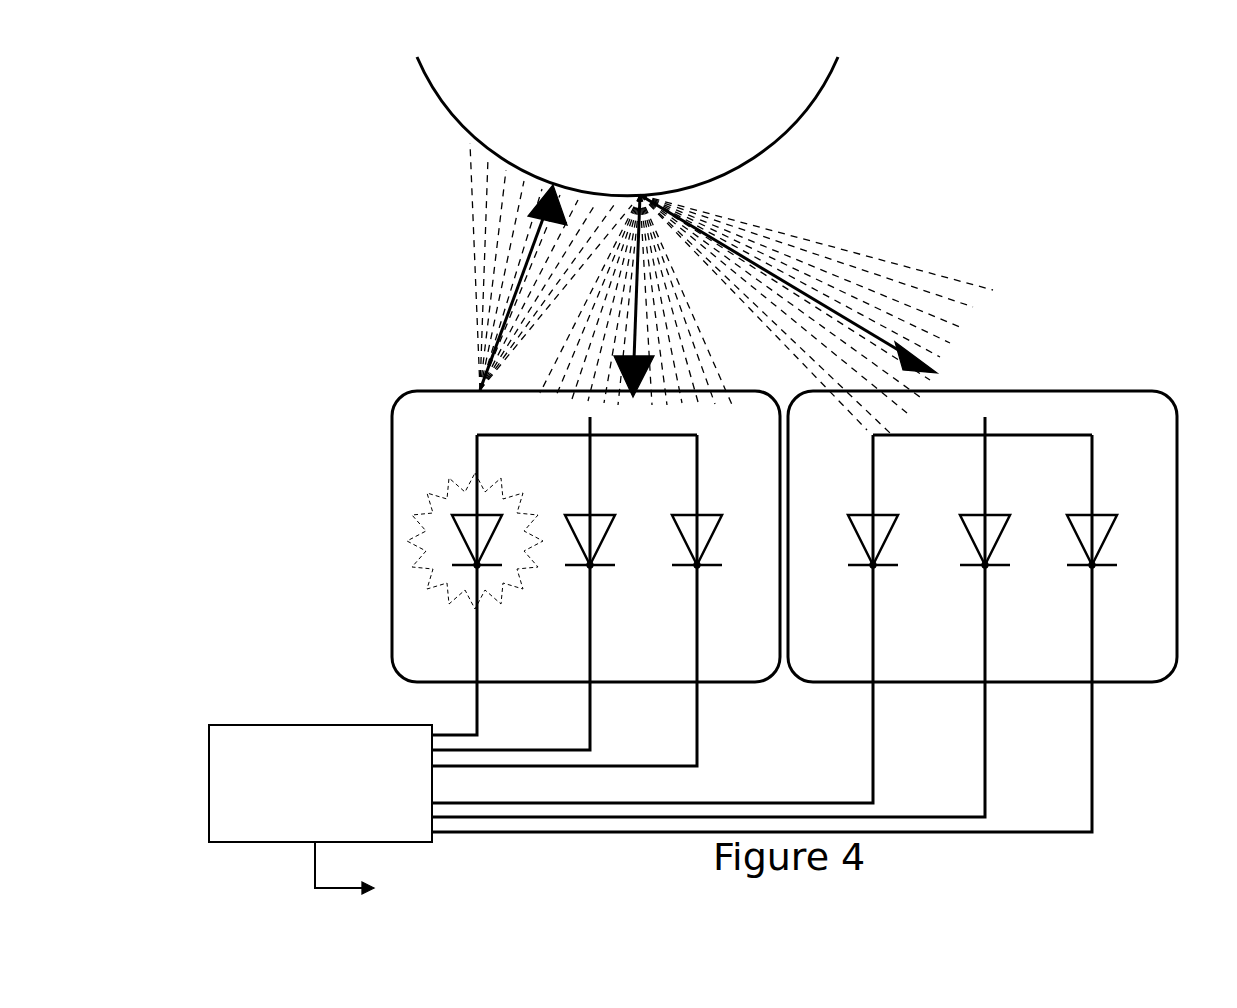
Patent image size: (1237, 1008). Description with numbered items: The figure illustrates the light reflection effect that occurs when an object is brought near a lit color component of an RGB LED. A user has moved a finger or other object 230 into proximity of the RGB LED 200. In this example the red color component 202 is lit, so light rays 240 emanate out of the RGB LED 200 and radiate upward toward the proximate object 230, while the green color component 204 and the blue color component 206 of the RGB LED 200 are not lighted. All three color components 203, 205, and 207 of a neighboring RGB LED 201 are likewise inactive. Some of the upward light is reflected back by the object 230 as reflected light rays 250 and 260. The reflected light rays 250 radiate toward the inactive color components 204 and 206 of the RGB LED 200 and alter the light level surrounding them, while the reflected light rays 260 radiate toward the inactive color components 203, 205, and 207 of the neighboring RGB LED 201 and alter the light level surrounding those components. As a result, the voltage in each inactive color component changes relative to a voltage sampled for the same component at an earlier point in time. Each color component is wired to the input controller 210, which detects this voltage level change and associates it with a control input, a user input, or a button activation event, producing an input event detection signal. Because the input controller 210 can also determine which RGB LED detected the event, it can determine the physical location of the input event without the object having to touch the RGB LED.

The RGB LED 200 is at (578, 520).
The neighboring RGB LED 201 is at (982, 520).
The red color component 202 is at (462, 510).
The color component 203 is at (859, 544).
The green color component 204 is at (576, 544).
The color component 205 is at (972, 544).
The blue color component 206 is at (683, 544).
The color component 207 is at (1080, 544).
The input controller 210 is at (230, 725).
The finger (or other object) 230 is at (640, 126).
The light rays 240 is at (521, 266).
The reflected light rays 250 is at (656, 301).
The reflected light rays 260 is at (816, 314).